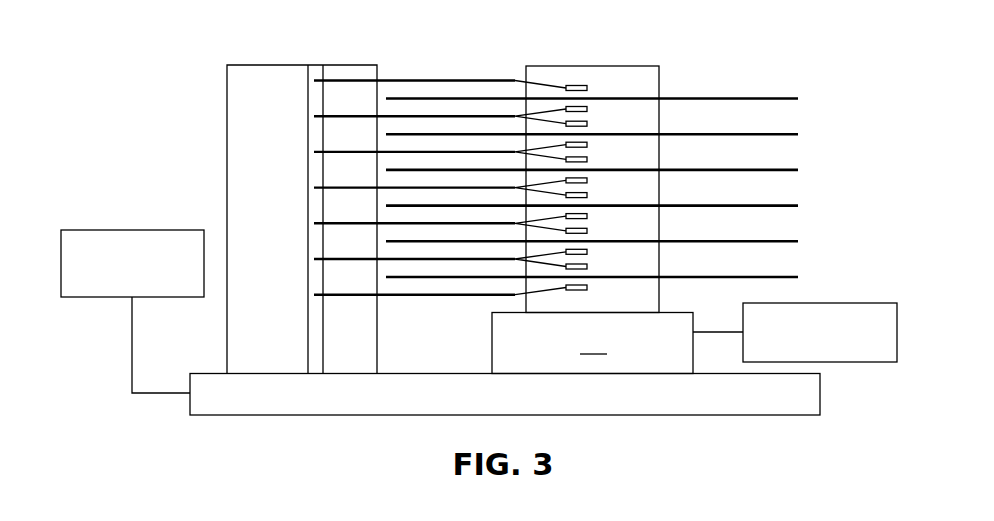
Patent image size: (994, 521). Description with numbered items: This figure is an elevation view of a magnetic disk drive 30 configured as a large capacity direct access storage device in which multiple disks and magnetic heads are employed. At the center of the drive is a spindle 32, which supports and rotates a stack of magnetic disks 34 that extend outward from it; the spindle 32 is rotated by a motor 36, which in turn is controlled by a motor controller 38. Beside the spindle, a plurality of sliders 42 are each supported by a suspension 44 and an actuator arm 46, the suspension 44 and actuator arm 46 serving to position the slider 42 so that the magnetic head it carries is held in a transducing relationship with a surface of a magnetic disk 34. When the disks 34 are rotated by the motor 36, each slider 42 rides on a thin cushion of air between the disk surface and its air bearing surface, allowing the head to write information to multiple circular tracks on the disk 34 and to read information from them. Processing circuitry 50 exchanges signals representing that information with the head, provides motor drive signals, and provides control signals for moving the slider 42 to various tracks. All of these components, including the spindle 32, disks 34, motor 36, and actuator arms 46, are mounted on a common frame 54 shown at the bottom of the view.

The magnetic disk drive 30 is at (677, 156).
The spindle 32 is at (648, 67).
The magnetic disk 34 is at (798, 98).
The motor 36 is at (592, 343).
The motor controller 38 is at (855, 363).
The slider 42 is at (588, 108).
The suspension 44 is at (551, 119).
The actuator arm 46 is at (495, 117).
The processing circuitry 50 is at (103, 230).
The frame 54 is at (243, 407).